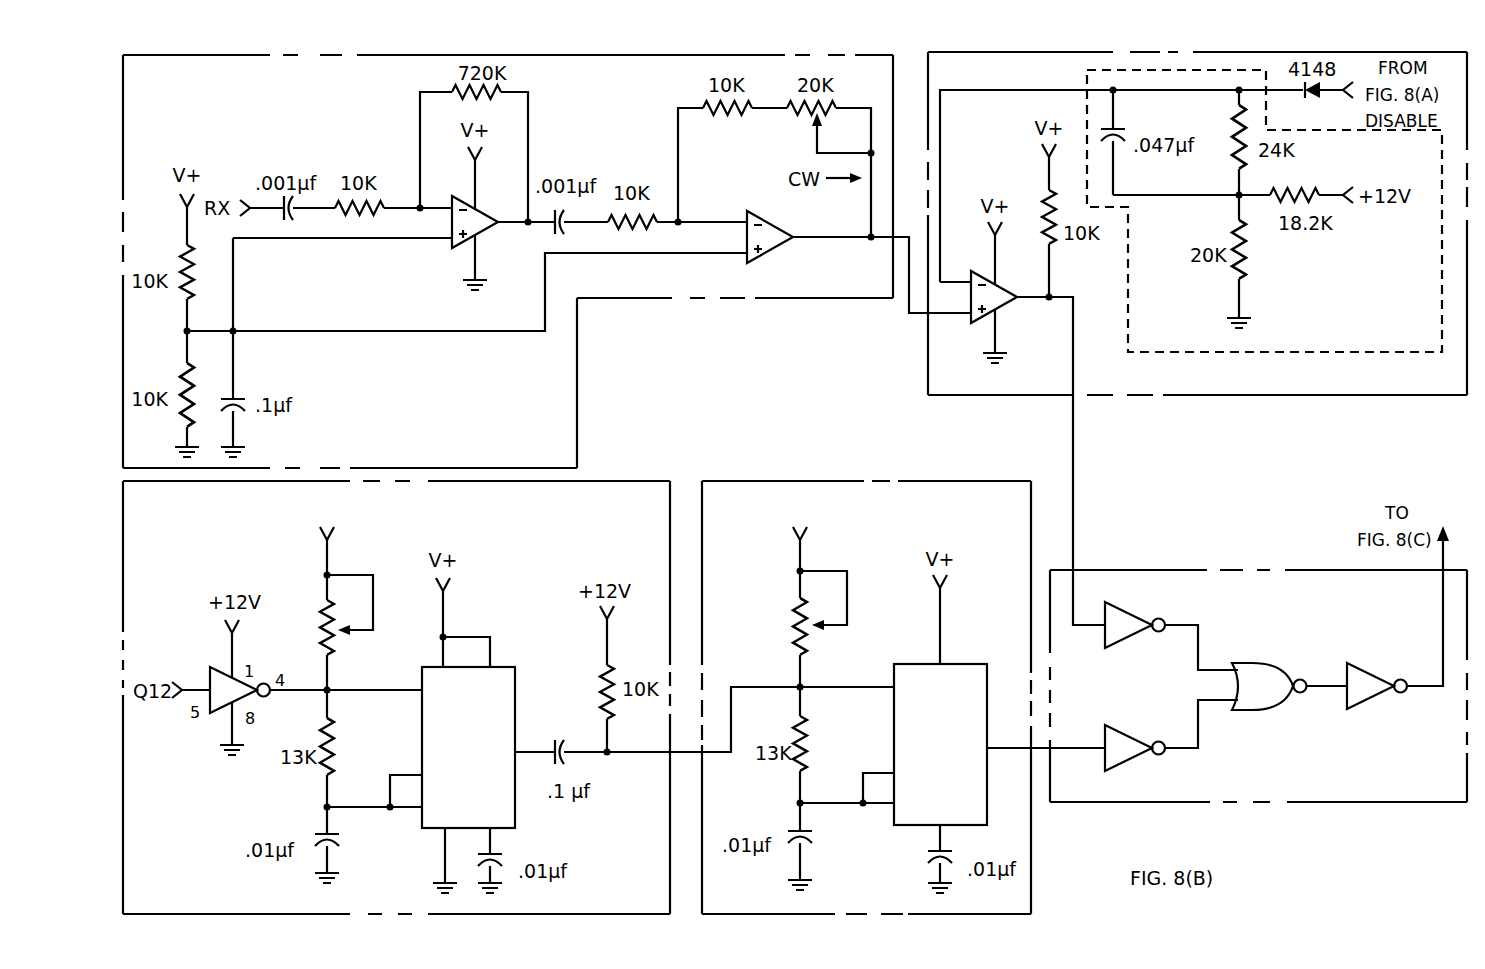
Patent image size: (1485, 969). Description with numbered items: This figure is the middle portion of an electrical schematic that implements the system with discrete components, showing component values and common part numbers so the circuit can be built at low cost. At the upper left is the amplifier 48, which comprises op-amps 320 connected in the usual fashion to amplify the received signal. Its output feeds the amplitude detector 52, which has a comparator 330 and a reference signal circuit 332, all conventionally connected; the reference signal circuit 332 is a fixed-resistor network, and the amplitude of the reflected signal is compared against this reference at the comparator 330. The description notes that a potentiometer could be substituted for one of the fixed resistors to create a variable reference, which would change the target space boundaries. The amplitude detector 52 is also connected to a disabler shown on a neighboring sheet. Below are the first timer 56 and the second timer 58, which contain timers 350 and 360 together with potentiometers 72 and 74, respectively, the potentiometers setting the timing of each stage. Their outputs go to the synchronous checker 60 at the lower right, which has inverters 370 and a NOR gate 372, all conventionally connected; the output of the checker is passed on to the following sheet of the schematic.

The amplifier 48 is at (248, 55).
The amplitude detector 52 is at (995, 52).
The first timer 56 is at (653, 481).
The second timer 58 is at (821, 481).
The synchronous checker 60 is at (1165, 570).
The potentiometer 72 is at (362, 562).
The potentiometer 74 is at (825, 552).
The op-amps 320 is at (496, 231).
The comparator 330 is at (1018, 305).
The reference signal circuit 332 is at (1343, 353).
The timer 350 is at (515, 683).
The timer 360 is at (958, 663).
The inverters 370 is at (1376, 672).
The NOR gate 372 is at (1268, 662).